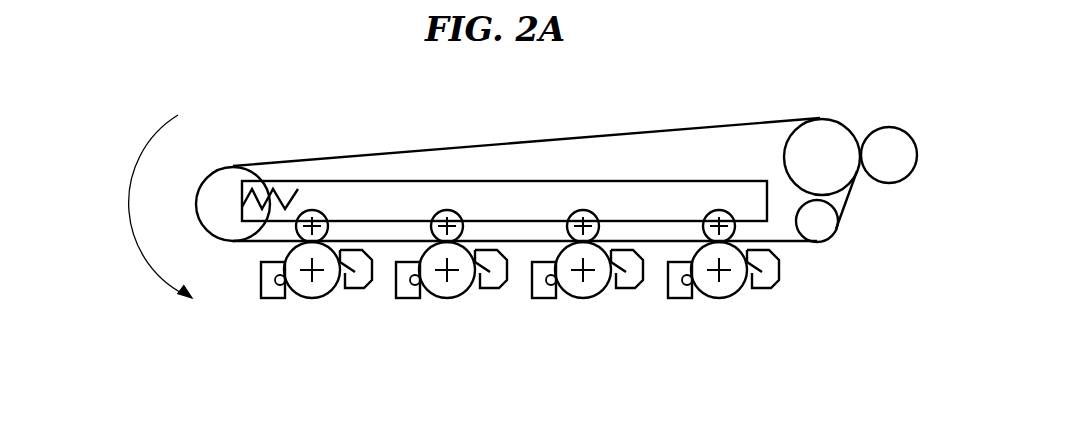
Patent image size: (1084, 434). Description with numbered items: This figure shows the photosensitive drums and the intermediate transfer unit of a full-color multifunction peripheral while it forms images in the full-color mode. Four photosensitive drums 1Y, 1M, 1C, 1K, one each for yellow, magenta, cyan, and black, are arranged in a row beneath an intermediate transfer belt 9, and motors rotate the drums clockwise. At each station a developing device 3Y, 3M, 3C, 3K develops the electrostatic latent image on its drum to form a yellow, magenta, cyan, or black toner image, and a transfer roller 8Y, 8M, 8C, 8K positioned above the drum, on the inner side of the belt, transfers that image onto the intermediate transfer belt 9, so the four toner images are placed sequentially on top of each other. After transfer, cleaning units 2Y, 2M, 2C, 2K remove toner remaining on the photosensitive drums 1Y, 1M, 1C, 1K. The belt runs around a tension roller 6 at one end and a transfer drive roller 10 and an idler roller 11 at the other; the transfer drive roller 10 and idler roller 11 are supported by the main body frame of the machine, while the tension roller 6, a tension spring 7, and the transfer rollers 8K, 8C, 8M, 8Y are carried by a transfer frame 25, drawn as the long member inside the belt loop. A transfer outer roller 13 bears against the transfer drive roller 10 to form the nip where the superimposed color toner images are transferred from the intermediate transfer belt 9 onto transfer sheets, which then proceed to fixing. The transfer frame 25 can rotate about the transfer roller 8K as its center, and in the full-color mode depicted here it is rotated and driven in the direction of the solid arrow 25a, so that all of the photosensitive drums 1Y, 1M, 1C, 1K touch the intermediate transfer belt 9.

The tension roller 6 is at (233, 173).
The tension spring 7 is at (285, 190).
The intermediate transfer belt 9 is at (673, 128).
The transfer drive roller 10 is at (824, 124).
The idler roller 11 is at (820, 232).
The transfer outer roller 13 is at (890, 137).
The transfer frame 25 is at (533, 188).
The solid arrow 25a is at (135, 206).
The photosensitive drum 1Y is at (315, 298).
The cleaning unit 2Y is at (356, 280).
The developing device 3Y is at (278, 298).
The transfer roller 8Y is at (328, 230).
The photosensitive drum 1M is at (450, 298).
The cleaning unit 2M is at (491, 280).
The developing device 3M is at (413, 298).
The transfer roller 8M is at (463, 230).
The photosensitive drum 1C is at (586, 298).
The cleaning unit 2C is at (627, 280).
The developing device 3C is at (549, 298).
The transfer roller 8C is at (599, 230).
The photosensitive drum 1K is at (722, 298).
The cleaning unit 2K is at (763, 280).
The developing device 3K is at (685, 298).
The transfer roller 8K is at (735, 230).